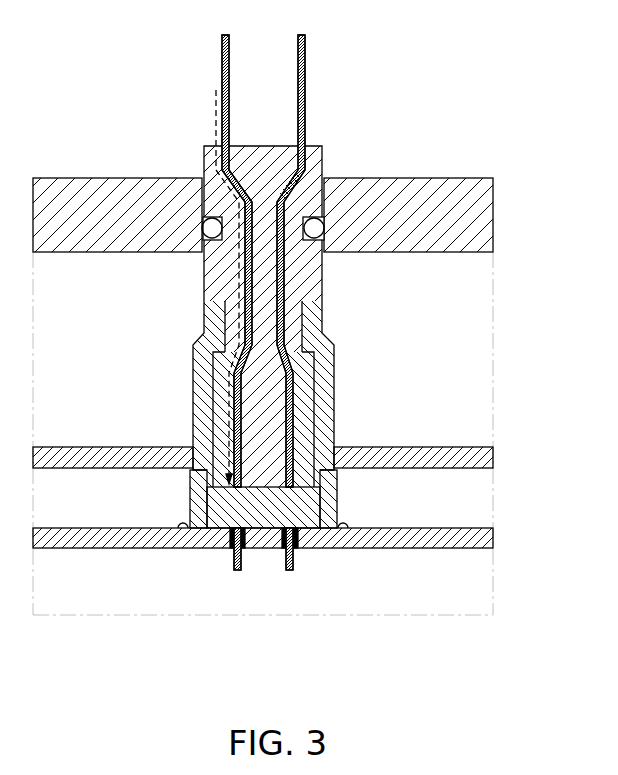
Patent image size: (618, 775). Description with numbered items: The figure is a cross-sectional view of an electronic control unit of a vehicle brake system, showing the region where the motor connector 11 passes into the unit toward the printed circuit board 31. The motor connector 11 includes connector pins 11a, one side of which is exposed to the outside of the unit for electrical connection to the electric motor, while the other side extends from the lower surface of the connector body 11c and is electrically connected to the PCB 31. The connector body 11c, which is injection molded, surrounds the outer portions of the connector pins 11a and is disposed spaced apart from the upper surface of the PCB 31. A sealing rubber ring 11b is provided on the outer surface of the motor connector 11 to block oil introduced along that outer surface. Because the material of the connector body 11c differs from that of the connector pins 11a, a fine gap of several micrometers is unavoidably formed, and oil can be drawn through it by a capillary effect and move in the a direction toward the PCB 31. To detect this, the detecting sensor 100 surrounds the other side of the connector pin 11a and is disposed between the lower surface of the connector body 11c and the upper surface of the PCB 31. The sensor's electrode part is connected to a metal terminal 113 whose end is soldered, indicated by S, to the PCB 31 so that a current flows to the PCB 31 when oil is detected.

The motor connector 11 is at (263, 261).
The connector pins 11a is at (316, 261).
The sealing rubber ring 11b is at (397, 178).
The connector body 11c is at (322, 157).
The oil introduction direction a is at (216, 124).
The detecting sensor 100 is at (338, 492).
The metal terminal 113 is at (192, 503).
The solder S is at (181, 529).
The printed circuit board 31 is at (445, 548).